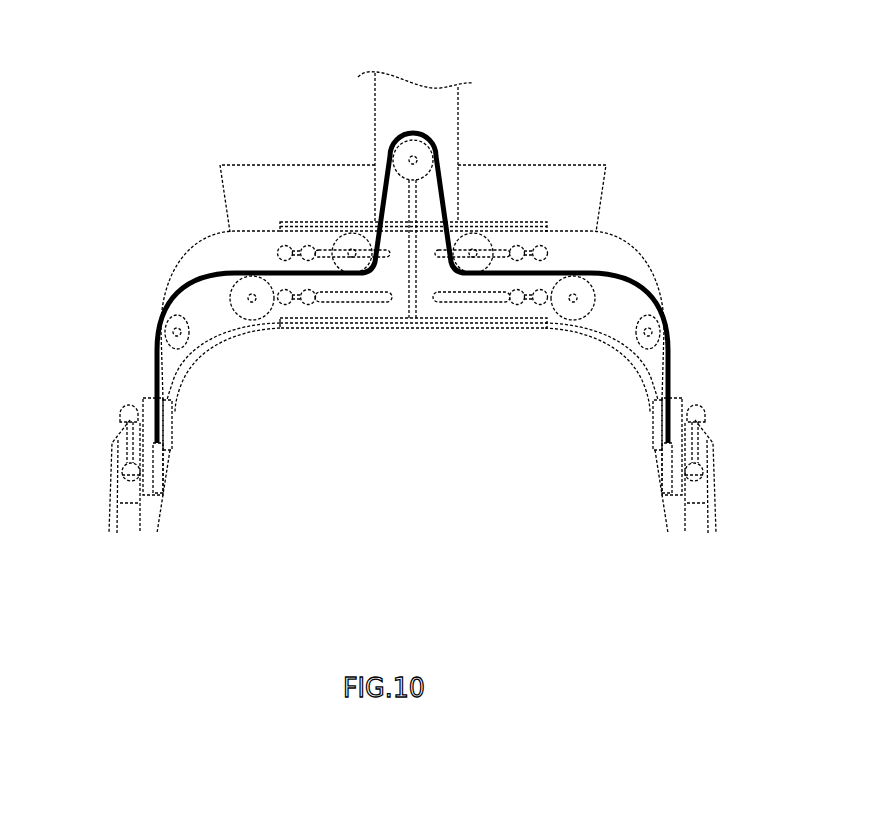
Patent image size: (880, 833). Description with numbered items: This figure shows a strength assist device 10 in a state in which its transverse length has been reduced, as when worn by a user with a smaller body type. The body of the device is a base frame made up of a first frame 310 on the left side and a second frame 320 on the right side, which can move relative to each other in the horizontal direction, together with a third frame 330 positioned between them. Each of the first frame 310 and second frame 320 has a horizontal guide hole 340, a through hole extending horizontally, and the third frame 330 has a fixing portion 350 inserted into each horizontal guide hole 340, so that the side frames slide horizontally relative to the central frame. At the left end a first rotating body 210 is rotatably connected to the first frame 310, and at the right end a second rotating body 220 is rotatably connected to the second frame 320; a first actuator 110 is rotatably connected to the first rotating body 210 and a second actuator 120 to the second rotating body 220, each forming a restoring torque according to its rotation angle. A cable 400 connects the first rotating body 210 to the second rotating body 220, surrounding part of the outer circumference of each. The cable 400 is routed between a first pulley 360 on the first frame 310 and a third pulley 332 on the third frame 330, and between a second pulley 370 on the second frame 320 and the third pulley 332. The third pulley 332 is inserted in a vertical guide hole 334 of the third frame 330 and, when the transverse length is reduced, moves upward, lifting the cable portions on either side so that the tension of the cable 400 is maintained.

The strength assist device 10 is at (189, 60).
The first actuator 110 is at (122, 513).
The second actuator 120 is at (703, 515).
The first rotating body 210 is at (153, 473).
The second rotating body 220 is at (670, 475).
The first frame 310 is at (188, 264).
The second frame 320 is at (633, 258).
The third frame 330 is at (450, 113).
The third pulley 332 is at (410, 133).
The vertical guide hole 334 is at (418, 205).
The horizontal guide hole 340 is at (350, 298).
The fixing portion 350 is at (283, 251).
The first pulley 360 is at (348, 240).
The second pulley 370 is at (478, 246).
The cable 400 is at (381, 183).